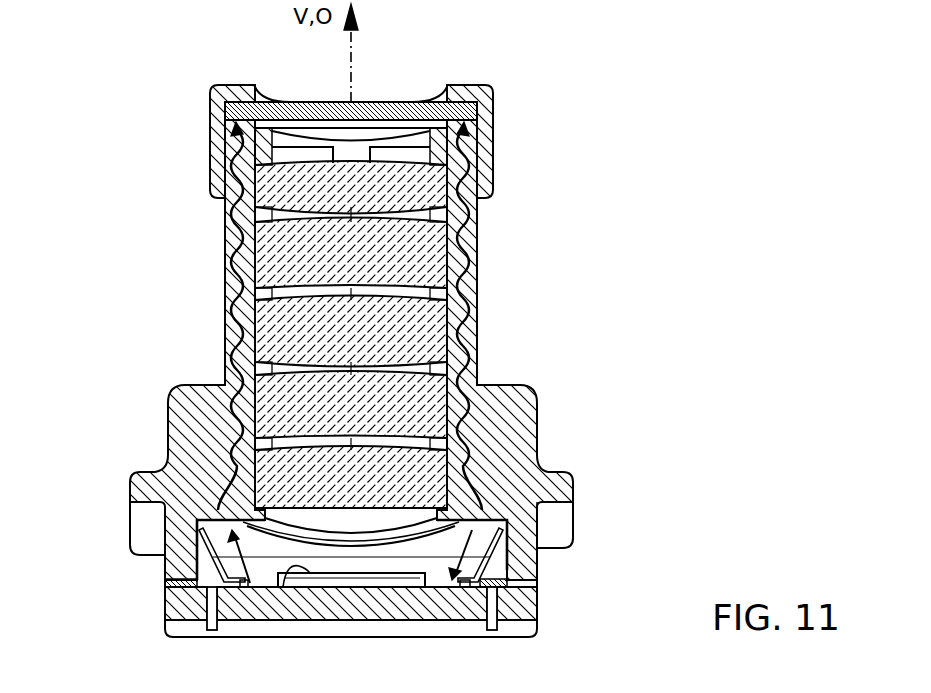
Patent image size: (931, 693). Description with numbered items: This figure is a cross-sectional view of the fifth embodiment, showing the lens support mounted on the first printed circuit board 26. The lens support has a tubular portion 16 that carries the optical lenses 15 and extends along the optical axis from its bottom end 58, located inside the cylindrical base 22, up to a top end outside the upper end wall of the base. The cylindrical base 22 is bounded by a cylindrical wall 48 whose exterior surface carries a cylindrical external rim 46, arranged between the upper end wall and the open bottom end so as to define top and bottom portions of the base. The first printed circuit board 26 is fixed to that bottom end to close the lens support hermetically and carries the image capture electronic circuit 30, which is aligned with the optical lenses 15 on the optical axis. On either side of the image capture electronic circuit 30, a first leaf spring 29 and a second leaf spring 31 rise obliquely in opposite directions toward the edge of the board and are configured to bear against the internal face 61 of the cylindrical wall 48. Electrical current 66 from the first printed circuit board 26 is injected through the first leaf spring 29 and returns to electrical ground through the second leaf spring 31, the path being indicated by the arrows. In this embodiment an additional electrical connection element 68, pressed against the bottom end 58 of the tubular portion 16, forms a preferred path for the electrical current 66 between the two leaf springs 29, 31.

The optical lenses 15 is at (370, 216).
The tubular portion 16 is at (222, 325).
The cylindrical base 22 is at (514, 438).
The first printed circuit board 26 is at (546, 612).
The first leaf spring 29 is at (458, 532).
The image capture electronic circuit 30 is at (300, 528).
The second leaf spring 31 is at (497, 553).
The cylindrical external rim 46 is at (152, 487).
The cylindrical wall 48 is at (588, 540).
The bottom end of the tubular portion 58 is at (220, 526).
The internal face of the cylindrical wall 61 is at (490, 500).
The electrical current 66 is at (205, 620).
The adhesive / thread interface 68 is at (237, 248).